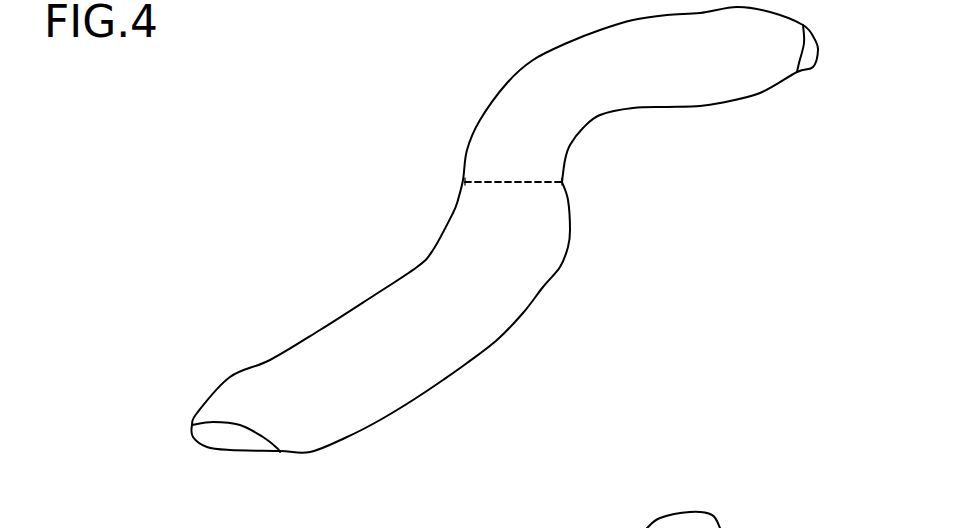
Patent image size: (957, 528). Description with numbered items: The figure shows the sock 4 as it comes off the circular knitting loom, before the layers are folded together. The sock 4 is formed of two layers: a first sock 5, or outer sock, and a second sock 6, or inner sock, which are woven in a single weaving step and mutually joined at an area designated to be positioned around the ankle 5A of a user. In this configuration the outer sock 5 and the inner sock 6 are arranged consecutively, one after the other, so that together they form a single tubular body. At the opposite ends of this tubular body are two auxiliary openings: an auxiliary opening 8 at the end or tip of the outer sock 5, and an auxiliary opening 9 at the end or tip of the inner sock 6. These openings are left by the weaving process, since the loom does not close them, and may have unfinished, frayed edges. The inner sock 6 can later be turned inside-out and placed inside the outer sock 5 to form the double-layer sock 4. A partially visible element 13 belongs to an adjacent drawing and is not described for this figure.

The sock 4 is at (509, 246).
The first sock 5 is at (362, 291).
The ankle area 5A is at (490, 179).
The second sock 6 is at (505, 80).
The auxiliary opening 8 is at (235, 435).
The auxiliary opening 9 is at (807, 57).
The adjacent figure component 13 is at (593, 520).